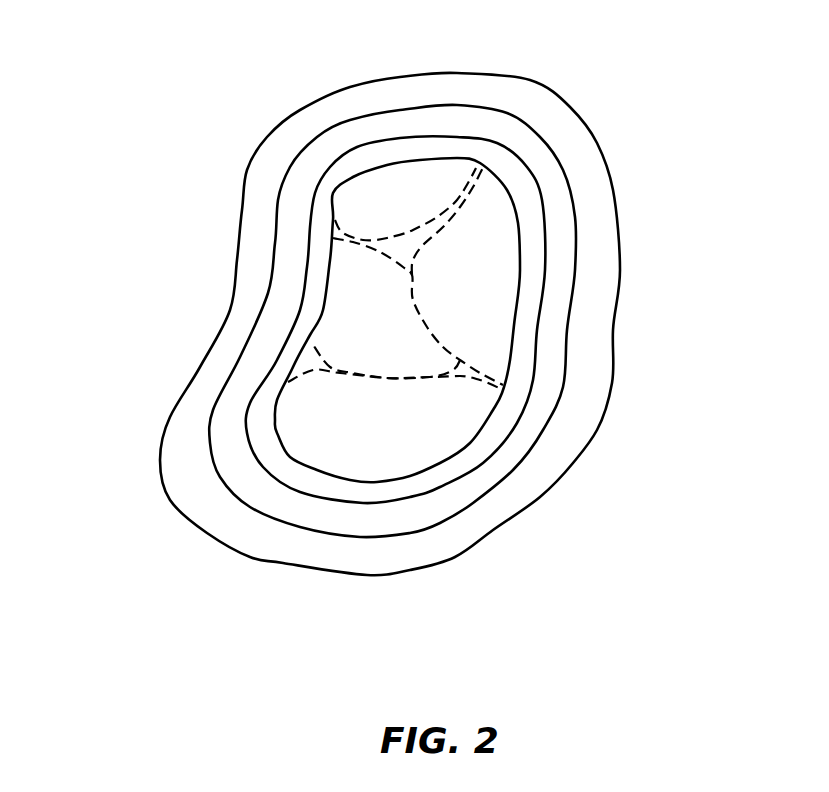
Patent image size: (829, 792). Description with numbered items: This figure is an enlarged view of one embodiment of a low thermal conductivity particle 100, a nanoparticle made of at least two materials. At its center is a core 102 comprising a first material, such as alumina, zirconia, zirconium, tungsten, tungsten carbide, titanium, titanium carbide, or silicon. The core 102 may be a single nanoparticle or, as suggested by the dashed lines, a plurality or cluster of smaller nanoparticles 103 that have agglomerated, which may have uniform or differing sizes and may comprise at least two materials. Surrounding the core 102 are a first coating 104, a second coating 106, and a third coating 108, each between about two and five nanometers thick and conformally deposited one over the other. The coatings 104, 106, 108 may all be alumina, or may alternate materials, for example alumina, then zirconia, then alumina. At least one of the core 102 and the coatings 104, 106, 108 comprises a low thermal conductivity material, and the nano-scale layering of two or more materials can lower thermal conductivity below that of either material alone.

The low thermal conductivity particle 100 is at (418, 328).
The core 102 is at (466, 250).
The nanoparticles 103 is at (440, 427).
The first coating 104 is at (445, 473).
The second coating 106 is at (433, 508).
The third coating 108 is at (427, 548).